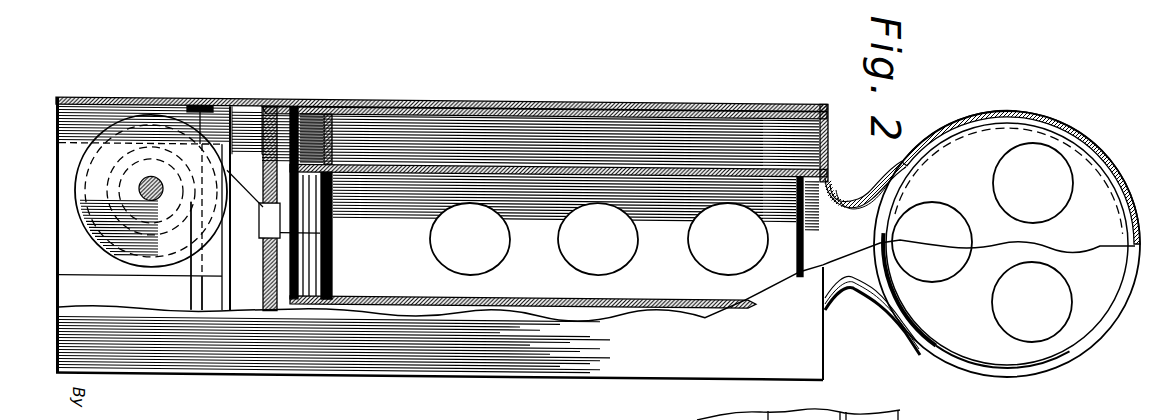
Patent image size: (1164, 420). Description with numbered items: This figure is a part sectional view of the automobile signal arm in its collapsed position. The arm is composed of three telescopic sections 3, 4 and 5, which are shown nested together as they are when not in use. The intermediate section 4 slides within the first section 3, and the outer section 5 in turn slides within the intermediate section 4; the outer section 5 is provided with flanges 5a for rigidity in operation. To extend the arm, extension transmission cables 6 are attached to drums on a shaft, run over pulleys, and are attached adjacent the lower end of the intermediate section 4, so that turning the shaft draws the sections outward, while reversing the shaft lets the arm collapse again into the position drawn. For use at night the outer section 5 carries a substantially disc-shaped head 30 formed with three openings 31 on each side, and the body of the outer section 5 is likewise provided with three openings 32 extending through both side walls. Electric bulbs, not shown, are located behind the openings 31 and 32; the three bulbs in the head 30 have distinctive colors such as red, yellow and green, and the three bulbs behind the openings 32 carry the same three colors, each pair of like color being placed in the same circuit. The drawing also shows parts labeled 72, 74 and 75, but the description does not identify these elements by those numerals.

The telescopic section 3 is at (392, 104).
The intermediate section 4 is at (828, 130).
The outer section 5 is at (831, 182).
The flanges 5a is at (283, 104).
The extension transmission cables 6 is at (145, 182).
The disc-shaped head 30 is at (1103, 290).
The openings 31 is at (1047, 338).
The openings 32 is at (599, 242).
The support rods 72 is at (173, 243).
The slide box 74 is at (258, 225).
The partition 75 is at (247, 136).